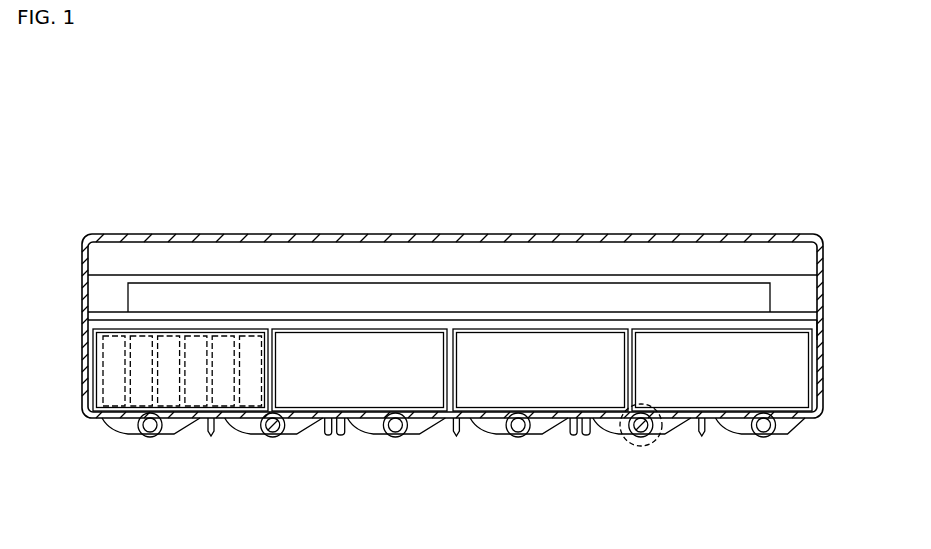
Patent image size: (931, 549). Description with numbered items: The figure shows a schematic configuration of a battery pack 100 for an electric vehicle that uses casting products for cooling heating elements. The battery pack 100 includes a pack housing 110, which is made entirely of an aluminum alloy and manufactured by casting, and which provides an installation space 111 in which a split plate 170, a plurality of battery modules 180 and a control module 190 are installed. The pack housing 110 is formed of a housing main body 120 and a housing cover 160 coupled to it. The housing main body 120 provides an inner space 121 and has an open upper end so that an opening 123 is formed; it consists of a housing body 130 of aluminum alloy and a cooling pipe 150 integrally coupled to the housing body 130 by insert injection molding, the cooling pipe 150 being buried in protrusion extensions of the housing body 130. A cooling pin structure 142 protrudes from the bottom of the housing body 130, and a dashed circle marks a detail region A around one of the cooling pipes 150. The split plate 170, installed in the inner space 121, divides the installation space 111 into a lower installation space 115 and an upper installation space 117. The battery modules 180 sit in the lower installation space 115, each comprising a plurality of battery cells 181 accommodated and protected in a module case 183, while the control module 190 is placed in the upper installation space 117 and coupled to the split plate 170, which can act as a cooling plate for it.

The battery pack 100 is at (703, 207).
The pack housing 110 is at (808, 430).
The installation space 111 is at (783, 290).
The lower installation space 115 is at (816, 330).
The upper installation space 117 is at (415, 268).
The housing main body 120 is at (95, 418).
The inner space 121 is at (118, 307).
The opening 123 is at (753, 275).
The housing body 130 is at (826, 385).
The cooling pin structure 142 is at (132, 440).
The cooling pipe 150 is at (232, 432).
The housing cover 160 is at (287, 241).
The split plate 170 is at (637, 318).
The battery module 180 is at (165, 325).
The battery cell 181 is at (267, 432).
The module case 183 is at (222, 333).
The control module 190 is at (538, 285).
The detail region A is at (635, 447).